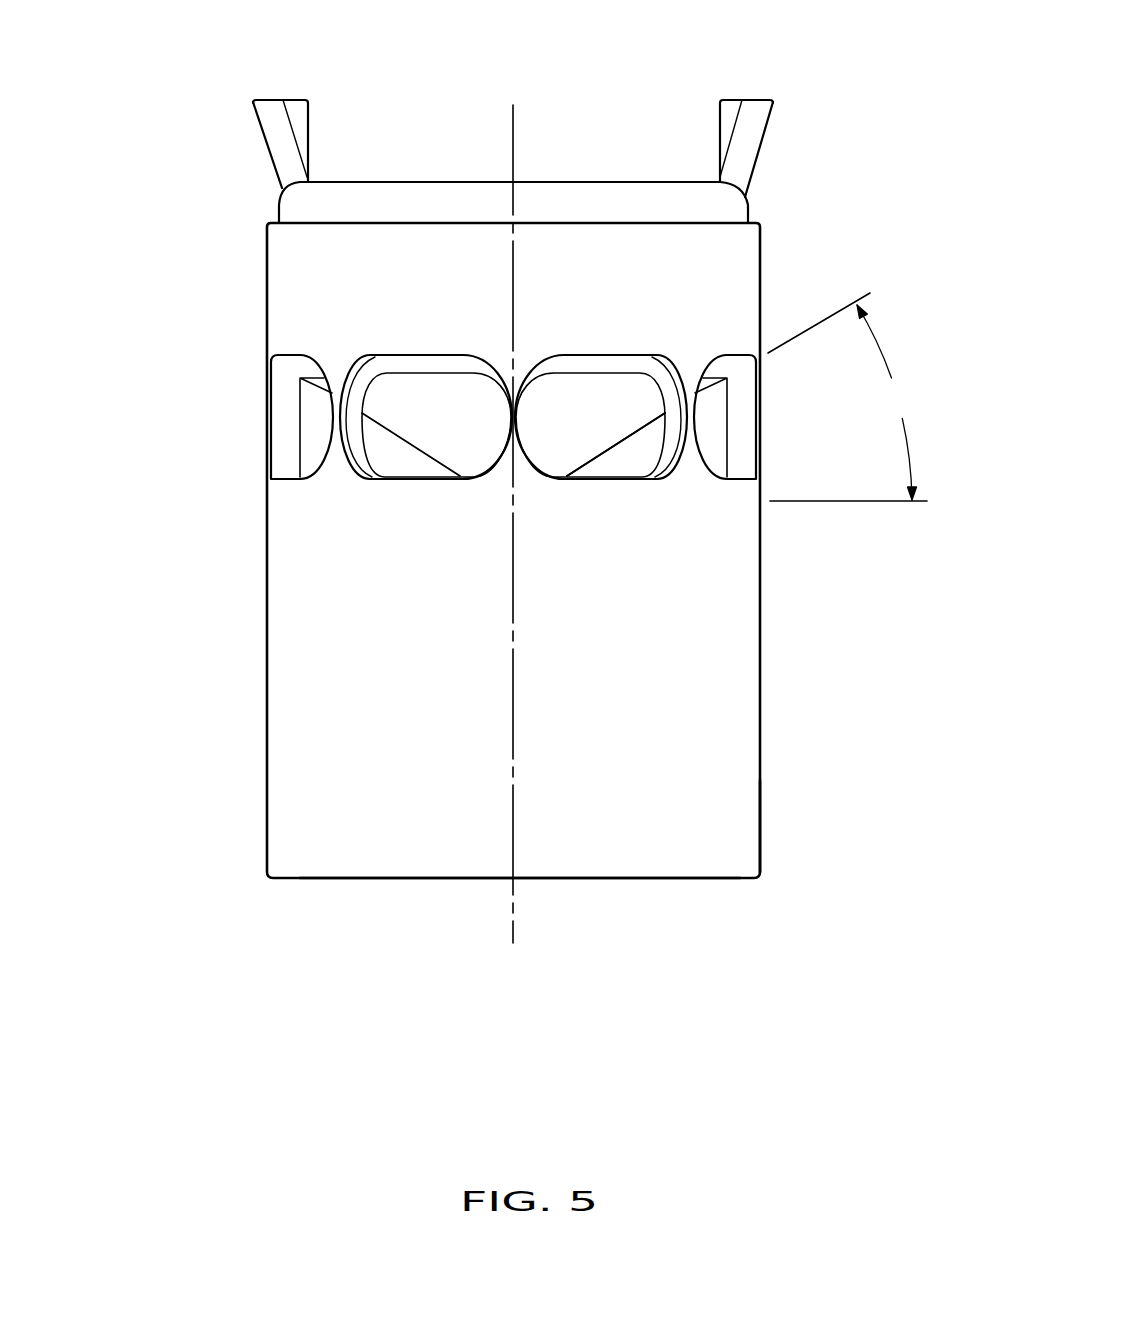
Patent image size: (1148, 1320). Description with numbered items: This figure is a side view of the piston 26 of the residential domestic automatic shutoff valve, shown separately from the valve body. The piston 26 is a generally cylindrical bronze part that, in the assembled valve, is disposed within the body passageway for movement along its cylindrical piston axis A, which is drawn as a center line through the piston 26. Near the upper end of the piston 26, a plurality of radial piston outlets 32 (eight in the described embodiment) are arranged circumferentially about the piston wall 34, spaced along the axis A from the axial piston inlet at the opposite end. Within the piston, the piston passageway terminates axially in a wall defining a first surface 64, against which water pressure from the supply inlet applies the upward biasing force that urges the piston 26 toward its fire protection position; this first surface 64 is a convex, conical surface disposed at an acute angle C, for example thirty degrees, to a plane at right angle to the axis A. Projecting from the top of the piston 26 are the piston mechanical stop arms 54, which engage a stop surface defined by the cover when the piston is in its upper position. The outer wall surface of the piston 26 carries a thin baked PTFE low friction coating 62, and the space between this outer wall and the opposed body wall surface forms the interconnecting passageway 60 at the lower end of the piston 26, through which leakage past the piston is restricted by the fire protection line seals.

The piston 26 is at (206, 873).
The radial piston outlets 32 is at (287, 407).
The piston wall 34 is at (730, 700).
The piston mechanical stop arms 54 is at (272, 128).
The interconnecting passageway 60 is at (628, 886).
The coating 62 is at (740, 847).
The first surface 64 is at (606, 463).
The piston axis A is at (513, 135).
The acute angle C is at (847, 397).